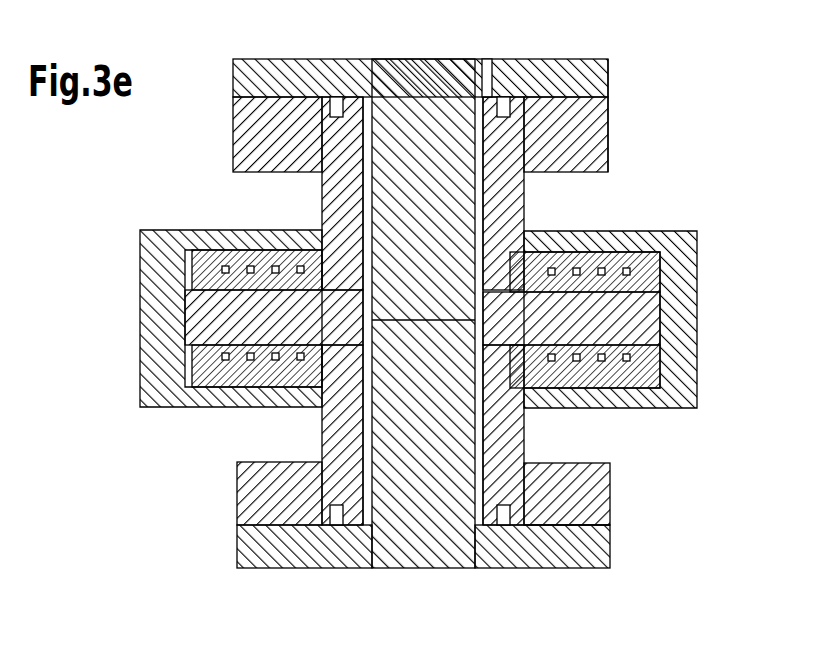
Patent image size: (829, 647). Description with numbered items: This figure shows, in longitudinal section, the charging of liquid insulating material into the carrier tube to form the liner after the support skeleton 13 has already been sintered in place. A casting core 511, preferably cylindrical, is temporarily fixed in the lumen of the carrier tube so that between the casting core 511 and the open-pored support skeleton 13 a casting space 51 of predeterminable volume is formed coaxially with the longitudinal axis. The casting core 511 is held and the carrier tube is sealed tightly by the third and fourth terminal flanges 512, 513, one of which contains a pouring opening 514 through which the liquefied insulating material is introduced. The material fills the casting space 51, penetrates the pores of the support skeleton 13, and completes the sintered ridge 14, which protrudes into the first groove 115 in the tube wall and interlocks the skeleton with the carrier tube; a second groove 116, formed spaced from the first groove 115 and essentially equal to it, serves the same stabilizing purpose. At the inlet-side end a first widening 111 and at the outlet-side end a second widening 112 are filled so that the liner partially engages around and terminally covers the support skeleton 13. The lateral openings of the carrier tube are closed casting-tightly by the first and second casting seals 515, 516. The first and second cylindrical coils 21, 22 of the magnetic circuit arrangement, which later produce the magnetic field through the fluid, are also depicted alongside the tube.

The support skeleton 13 is at (497, 540).
The ridge 14 is at (355, 192).
The first cylindrical coil 21 is at (214, 246).
The second cylindrical coil 22 is at (637, 232).
The casting space 51 is at (338, 538).
The first widening 111 is at (650, 115).
The second widening 112 is at (608, 496).
The first groove 115 is at (526, 196).
The second groove 116 is at (527, 434).
The casting core 511 is at (322, 433).
The third terminal flange 512 is at (433, 557).
The fourth terminal flange 513 is at (315, 58).
The pouring opening 514 is at (492, 60).
The first casting seal 515 is at (142, 345).
The second casting seal 516 is at (698, 272).